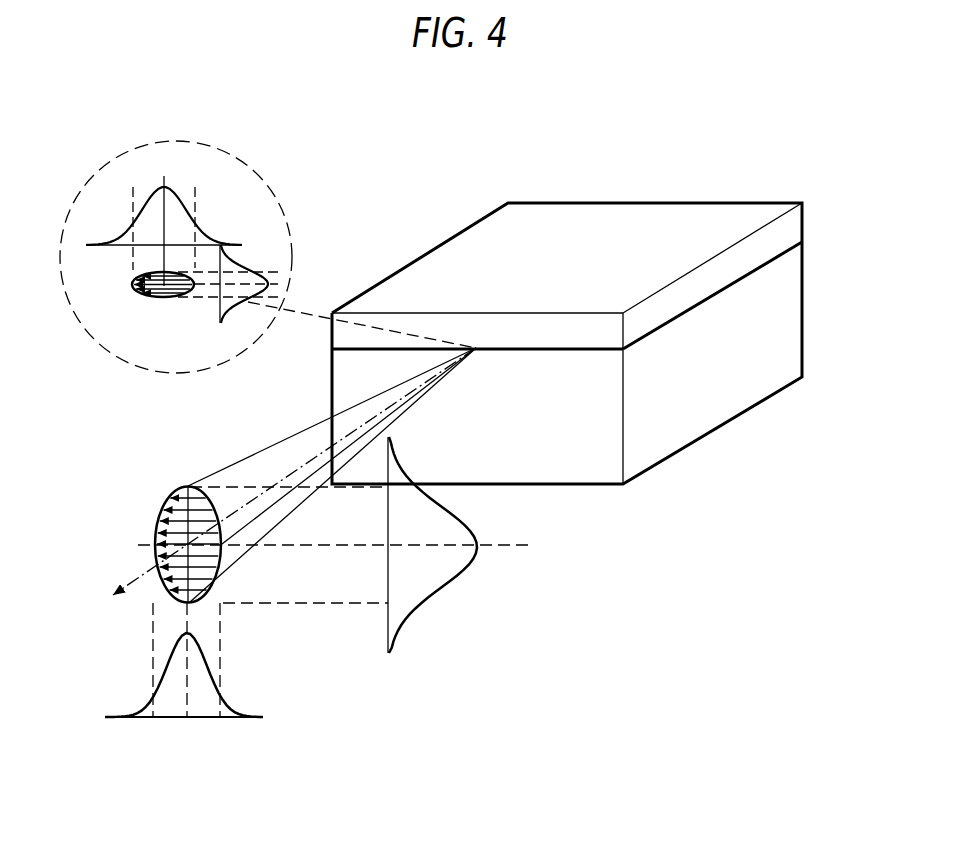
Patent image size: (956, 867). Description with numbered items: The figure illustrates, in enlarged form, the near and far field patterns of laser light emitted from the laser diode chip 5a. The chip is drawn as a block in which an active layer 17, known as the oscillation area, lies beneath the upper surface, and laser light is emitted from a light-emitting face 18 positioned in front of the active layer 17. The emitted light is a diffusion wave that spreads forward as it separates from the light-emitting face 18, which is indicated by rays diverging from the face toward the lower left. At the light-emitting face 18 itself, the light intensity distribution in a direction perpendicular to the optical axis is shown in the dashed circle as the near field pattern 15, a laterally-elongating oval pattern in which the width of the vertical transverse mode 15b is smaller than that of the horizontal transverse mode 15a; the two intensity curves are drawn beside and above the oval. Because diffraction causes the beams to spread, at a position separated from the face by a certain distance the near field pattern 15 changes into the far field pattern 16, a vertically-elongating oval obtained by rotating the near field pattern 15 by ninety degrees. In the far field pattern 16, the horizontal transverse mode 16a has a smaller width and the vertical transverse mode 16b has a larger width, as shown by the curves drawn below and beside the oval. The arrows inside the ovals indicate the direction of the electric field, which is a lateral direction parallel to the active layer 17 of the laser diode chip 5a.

The laser diode chip 5a is at (621, 200).
The near field pattern 15 is at (130, 298).
The horizontal transverse mode 15a is at (128, 225).
The vertical transverse mode 15b is at (232, 270).
The far field pattern 16 is at (222, 548).
The horizontal transverse mode 16a is at (153, 698).
The vertical transverse mode 16b is at (467, 573).
The active layer 17 is at (758, 269).
The light-emitting face 18 is at (588, 350).